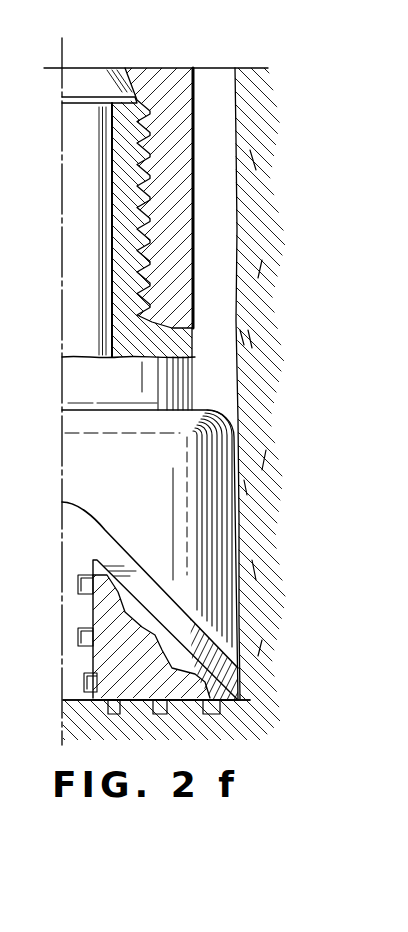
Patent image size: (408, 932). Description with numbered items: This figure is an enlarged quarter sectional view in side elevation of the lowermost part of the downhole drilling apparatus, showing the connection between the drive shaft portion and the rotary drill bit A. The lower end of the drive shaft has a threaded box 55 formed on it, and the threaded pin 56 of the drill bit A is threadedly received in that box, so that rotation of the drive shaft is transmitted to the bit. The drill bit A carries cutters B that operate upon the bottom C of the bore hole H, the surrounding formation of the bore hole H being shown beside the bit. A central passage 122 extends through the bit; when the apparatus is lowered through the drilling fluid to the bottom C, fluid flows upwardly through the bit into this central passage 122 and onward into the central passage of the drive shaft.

The threaded box 55 is at (158, 76).
The threaded pin 56 is at (120, 223).
The central passage 122 is at (80, 312).
The bore hole H is at (234, 88).
The rotary drill bit A is at (156, 492).
The cutters B is at (105, 623).
The bottom of the bore hole C is at (78, 698).